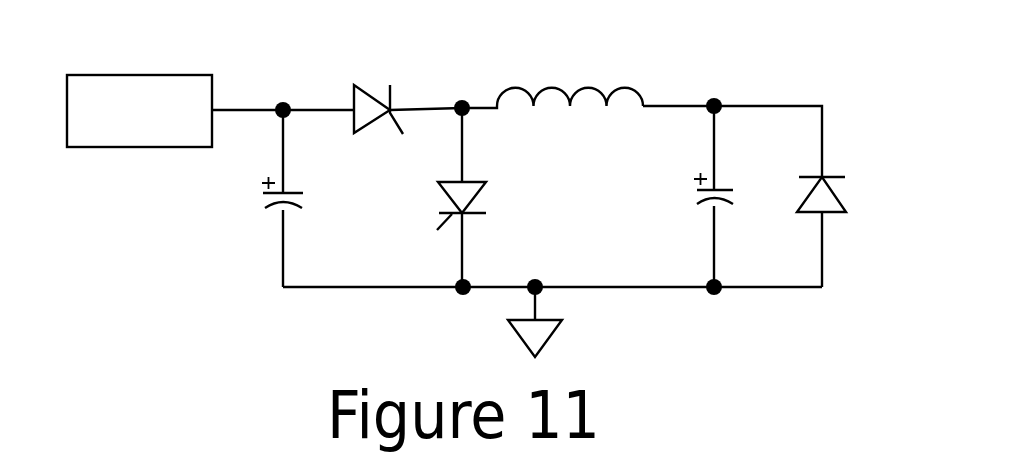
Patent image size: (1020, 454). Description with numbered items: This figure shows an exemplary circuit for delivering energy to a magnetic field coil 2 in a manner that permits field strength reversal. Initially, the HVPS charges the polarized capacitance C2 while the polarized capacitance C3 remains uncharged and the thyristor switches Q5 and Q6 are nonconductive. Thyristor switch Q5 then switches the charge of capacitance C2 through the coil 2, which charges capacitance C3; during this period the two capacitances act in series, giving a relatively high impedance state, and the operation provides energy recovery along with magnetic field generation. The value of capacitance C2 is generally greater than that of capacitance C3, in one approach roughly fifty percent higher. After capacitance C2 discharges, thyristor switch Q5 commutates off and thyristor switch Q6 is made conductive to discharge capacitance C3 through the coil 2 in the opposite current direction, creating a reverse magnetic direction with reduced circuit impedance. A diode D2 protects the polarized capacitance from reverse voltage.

The coil 2 is at (520, 58).
The thyristor switch Q5 is at (384, 74).
The thyristor switch Q6 is at (499, 193).
The polarized capacitance C2 is at (322, 182).
The polarized capacitance C3 is at (736, 161).
The diode D2 is at (840, 164).
The high voltage power supply HVPS is at (139, 111).